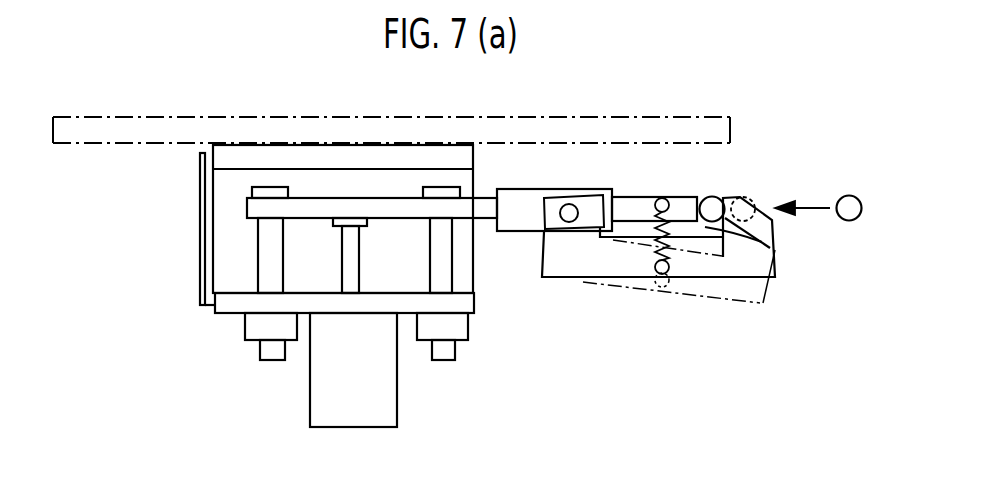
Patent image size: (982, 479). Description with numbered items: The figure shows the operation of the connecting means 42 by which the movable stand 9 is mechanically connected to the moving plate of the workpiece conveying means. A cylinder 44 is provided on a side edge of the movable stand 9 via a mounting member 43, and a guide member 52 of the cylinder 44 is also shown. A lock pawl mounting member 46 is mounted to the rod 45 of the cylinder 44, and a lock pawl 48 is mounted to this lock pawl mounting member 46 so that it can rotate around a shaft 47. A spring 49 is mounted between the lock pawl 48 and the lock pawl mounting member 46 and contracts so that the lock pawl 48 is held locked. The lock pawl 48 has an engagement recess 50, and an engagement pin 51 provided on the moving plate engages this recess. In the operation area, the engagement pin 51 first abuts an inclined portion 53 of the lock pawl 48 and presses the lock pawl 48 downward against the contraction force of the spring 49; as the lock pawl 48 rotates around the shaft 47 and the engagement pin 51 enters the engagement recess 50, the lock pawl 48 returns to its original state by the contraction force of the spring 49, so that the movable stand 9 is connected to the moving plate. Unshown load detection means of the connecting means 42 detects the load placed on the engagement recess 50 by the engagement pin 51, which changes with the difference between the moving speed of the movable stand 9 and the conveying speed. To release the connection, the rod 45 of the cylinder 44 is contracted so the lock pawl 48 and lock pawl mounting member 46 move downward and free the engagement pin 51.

The movable stand 9 is at (682, 112).
The connecting means 42 is at (566, 322).
The mounting member 43 is at (200, 221).
The cylinder 44 is at (398, 398).
The rod 45 is at (360, 258).
The lock pawl mounting member 46 is at (510, 189).
The shaft 47 is at (578, 206).
The lock pawl 48 is at (730, 199).
The spring 49 is at (655, 216).
The engagement recess 50 is at (762, 241).
The engagement pin 51 is at (712, 196).
The guide member 52 is at (454, 259).
The inclined portion 53 is at (763, 206).